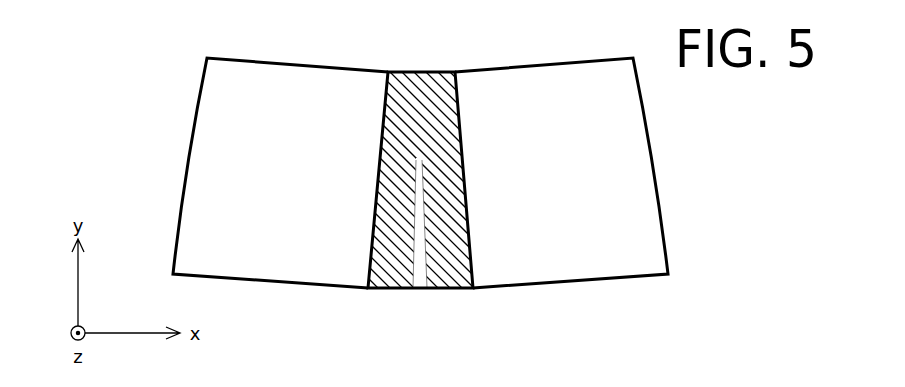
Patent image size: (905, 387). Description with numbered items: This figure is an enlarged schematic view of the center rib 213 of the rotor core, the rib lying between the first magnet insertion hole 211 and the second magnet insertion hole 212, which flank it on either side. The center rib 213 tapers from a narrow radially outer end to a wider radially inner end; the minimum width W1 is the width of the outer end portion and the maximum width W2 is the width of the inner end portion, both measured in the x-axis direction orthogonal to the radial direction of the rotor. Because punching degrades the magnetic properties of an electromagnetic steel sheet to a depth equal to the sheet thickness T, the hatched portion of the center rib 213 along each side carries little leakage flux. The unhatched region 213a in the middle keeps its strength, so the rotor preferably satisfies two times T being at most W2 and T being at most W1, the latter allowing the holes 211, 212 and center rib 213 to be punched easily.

The first magnet insertion hole 211 is at (246, 84).
The second magnet insertion hole 212 is at (599, 84).
The center rib 213 is at (408, 180).
The region 213a is at (420, 268).
The minimum width W1 is at (455, 72).
The maximum width W2 is at (368, 288).
The thickness T is at (384, 224).